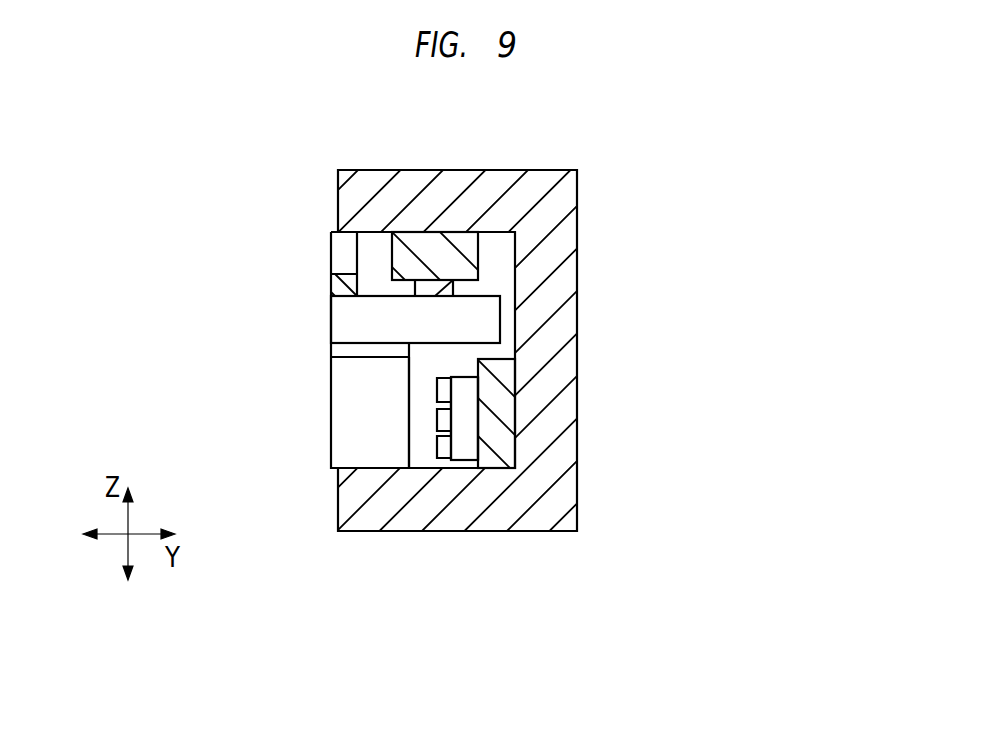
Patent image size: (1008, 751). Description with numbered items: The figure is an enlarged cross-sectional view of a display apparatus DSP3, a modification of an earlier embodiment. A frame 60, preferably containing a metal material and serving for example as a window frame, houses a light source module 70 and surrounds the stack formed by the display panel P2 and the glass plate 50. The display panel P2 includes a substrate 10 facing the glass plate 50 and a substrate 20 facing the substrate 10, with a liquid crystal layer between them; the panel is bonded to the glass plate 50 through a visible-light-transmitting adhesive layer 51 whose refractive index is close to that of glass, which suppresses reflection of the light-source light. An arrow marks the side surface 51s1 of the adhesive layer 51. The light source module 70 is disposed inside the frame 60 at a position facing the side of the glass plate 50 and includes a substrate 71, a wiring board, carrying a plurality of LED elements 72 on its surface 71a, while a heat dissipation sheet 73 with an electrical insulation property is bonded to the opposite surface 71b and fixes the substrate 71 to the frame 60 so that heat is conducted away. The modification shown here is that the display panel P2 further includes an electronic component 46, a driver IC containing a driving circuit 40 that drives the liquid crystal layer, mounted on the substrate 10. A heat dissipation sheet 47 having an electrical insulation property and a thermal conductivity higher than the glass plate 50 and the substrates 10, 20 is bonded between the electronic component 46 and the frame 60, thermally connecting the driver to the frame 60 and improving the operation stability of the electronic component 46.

The display apparatus DSP3 is at (178, 256).
The display panel P2 is at (278, 230).
The substrate 20 is at (346, 258).
The substrate 10 is at (352, 319).
The driving circuit 40 is at (524, 203).
The electronic component 46 is at (428, 287).
The heat dissipation sheet 47 is at (463, 247).
The glass plate 50 is at (352, 432).
The adhesive layer 51 is at (348, 353).
The side surface of adhesive layer 51s1 is at (409, 371).
The frame 60 is at (562, 208).
The light source module 70 is at (385, 558).
The substrate 71 is at (464, 455).
The surface 71a is at (437, 410).
The surface 71b is at (480, 421).
The LED elements 72 is at (437, 448).
The heat dissipation sheet 73 is at (507, 455).